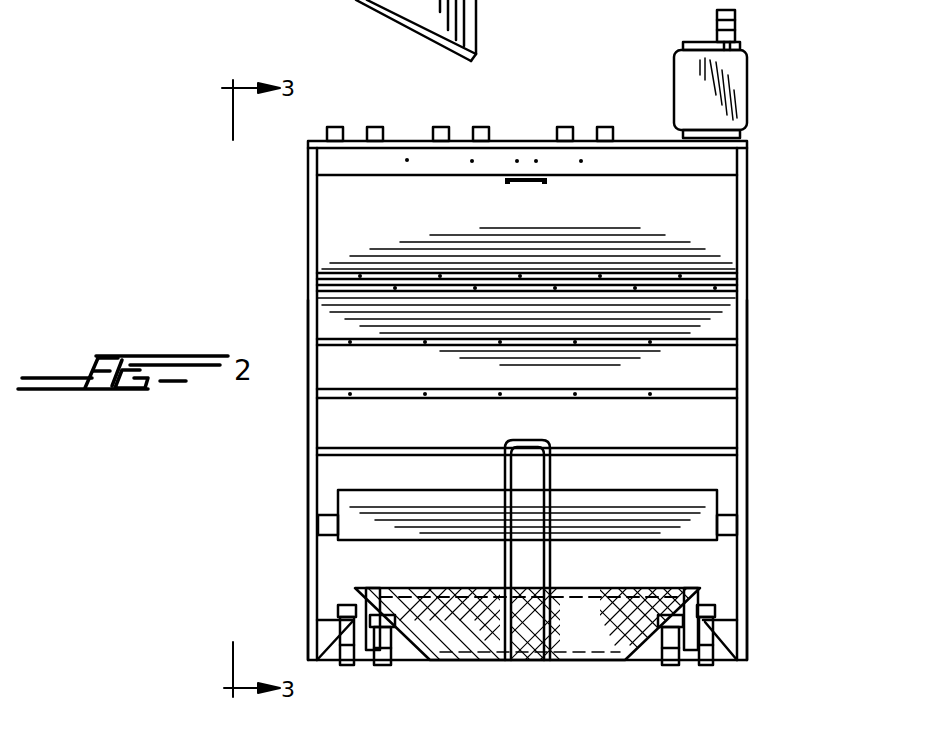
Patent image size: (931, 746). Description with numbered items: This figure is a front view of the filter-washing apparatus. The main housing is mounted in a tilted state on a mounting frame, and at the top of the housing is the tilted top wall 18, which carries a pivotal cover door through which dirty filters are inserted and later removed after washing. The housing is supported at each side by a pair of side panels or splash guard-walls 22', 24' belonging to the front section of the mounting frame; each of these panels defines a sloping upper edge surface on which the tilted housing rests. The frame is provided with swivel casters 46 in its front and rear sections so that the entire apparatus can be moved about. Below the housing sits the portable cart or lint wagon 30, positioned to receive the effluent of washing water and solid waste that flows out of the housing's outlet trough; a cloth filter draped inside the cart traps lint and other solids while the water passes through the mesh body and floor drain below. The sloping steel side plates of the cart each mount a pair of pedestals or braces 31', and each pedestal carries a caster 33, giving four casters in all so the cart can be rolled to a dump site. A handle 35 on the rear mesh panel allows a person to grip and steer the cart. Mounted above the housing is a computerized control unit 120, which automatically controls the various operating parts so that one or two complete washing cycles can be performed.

The top wall 18 is at (620, 212).
The side panel or splash guard-wall 22' is at (273, 480).
The side panel or splash guard-wall 24' is at (771, 480).
The portable cart or lint wagon 30 is at (515, 668).
The pedestal or brace 31' is at (527, 600).
The caster 33 is at (382, 665).
The handle 35 is at (550, 582).
The swivel caster 46 is at (345, 666).
The computerized control unit 120 is at (765, 88).